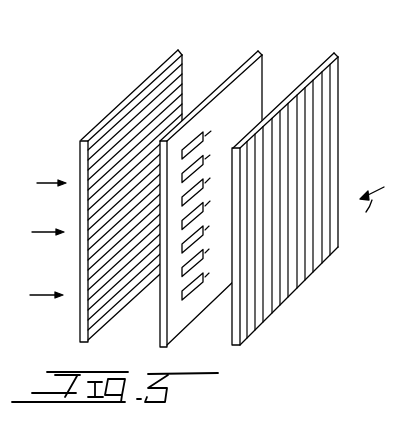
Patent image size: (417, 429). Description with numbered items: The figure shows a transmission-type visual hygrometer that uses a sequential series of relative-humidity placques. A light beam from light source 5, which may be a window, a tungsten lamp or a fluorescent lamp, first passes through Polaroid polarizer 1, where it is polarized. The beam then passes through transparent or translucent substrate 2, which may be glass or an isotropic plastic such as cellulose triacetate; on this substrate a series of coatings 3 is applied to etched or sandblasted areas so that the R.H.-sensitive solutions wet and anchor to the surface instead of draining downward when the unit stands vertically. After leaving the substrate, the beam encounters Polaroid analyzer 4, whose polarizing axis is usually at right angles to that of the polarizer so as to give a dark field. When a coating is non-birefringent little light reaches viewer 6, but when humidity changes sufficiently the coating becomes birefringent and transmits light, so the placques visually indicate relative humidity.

The Polaroid polarizer 1 is at (182, 55).
The transparent or translucent substrate 2 is at (262, 55).
The crystal layer 3 is at (211, 201).
The Polaroid analyzer 4 is at (338, 57).
The light source 5 is at (37, 183).
The viewer 6 is at (383, 187).